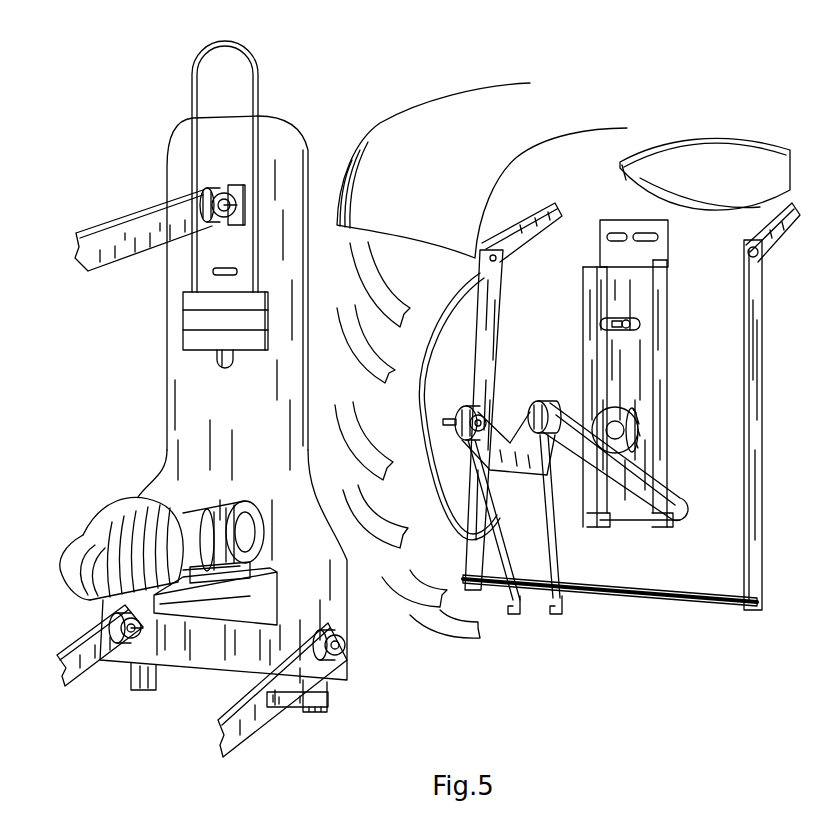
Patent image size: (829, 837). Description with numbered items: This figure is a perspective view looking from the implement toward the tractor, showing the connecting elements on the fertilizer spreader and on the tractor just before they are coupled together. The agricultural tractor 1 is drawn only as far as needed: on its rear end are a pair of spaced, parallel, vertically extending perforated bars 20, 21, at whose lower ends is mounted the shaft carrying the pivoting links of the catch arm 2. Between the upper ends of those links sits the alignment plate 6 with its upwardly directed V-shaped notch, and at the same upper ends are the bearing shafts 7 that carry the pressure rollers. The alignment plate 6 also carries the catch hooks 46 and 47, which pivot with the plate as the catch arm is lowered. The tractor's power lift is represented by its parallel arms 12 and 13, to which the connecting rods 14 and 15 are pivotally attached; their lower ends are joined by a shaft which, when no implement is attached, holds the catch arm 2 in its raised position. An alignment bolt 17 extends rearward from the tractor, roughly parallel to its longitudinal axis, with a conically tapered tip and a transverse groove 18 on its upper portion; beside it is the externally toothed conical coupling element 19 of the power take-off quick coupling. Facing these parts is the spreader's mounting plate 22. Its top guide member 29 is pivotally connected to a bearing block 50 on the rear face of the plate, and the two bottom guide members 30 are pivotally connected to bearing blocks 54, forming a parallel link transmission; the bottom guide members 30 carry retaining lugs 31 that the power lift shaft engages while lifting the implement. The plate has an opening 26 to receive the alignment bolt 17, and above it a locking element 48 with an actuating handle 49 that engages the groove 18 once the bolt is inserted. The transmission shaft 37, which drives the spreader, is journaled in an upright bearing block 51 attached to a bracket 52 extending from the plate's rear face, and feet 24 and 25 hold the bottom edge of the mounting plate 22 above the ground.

The agricultural tractor 1 is at (531, 72).
The catch arm 2 is at (565, 516).
The alignment plate 6 is at (508, 440).
The bearing shafts 7 is at (455, 425).
The parallel arm 12 is at (530, 218).
The parallel arm 13 is at (772, 240).
The connecting rod 14 is at (487, 300).
The connecting rod 15 is at (752, 382).
The alignment bolt 17 is at (604, 320).
The transverse groove 18 is at (633, 321).
The coupling element 19 is at (640, 445).
The perforated bar 20 is at (615, 462).
The perforated bar 21 is at (668, 415).
The mounting plate 22 is at (292, 440).
The foot 24 is at (144, 692).
The foot 25 is at (322, 712).
The opening 26 is at (233, 361).
The top guide member 29 is at (143, 228).
The bottom guide members 30 is at (75, 682).
The retaining lugs 31 is at (293, 708).
The transmission shaft 37 is at (86, 535).
The catch hook 46 is at (520, 618).
The catch hook 47 is at (568, 615).
The locking element 48 is at (195, 303).
The actuating handle 49 is at (258, 58).
The bearing block 50 is at (222, 190).
The upright bearing block 51 is at (190, 510).
The bracket 52 is at (262, 600).
The bearing blocks 54 is at (126, 647).